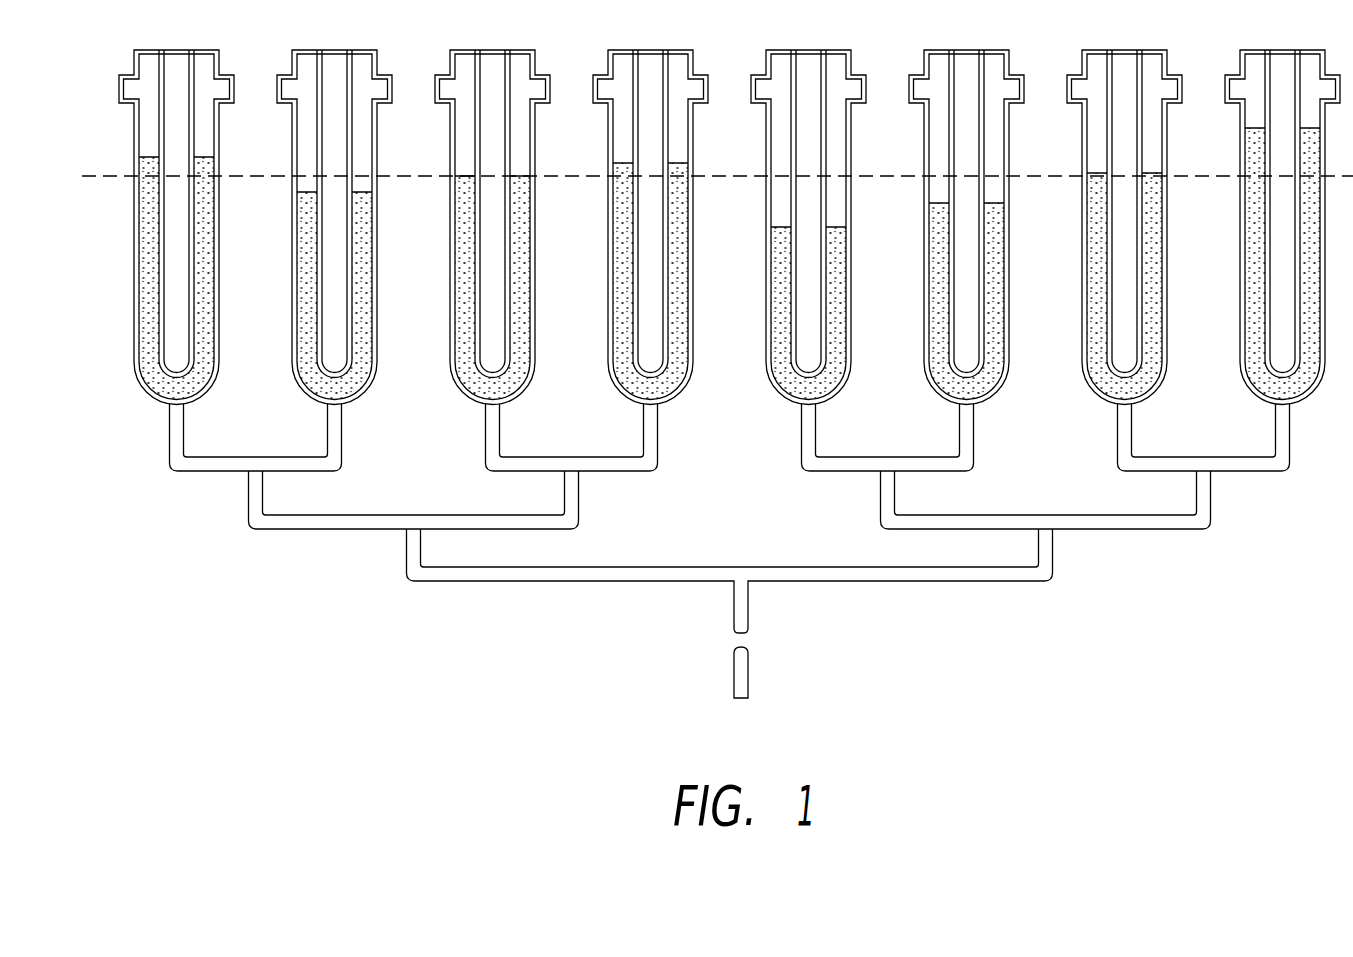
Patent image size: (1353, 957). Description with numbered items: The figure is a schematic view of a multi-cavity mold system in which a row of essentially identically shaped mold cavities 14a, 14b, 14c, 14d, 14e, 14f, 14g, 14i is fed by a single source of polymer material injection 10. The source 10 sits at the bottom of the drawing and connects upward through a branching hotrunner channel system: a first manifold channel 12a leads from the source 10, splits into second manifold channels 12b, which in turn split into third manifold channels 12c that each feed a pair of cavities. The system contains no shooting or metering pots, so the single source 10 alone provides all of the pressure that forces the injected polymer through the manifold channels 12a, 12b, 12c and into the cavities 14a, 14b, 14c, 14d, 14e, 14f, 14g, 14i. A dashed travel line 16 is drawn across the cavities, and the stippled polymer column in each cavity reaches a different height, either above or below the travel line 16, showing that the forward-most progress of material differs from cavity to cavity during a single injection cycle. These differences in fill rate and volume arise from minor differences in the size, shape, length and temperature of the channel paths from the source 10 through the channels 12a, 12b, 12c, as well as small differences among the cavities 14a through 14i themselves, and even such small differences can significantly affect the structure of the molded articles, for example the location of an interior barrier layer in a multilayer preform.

The single source of polymer material injection 10 is at (749, 680).
The manifold channel 12a is at (885, 583).
The manifold channel 12b is at (298, 531).
The manifold channel 12c is at (192, 473).
The mold cavity 14a is at (1262, 401).
The mold cavity 14b is at (1104, 401).
The mold cavity 14c is at (946, 401).
The mold cavity 14d is at (788, 401).
The mold cavity 14e is at (630, 401).
The mold cavity 14f is at (472, 401).
The mold cavity 14g is at (314, 401).
The mold cavity 14i is at (156, 401).
The travel line 16 is at (120, 176).